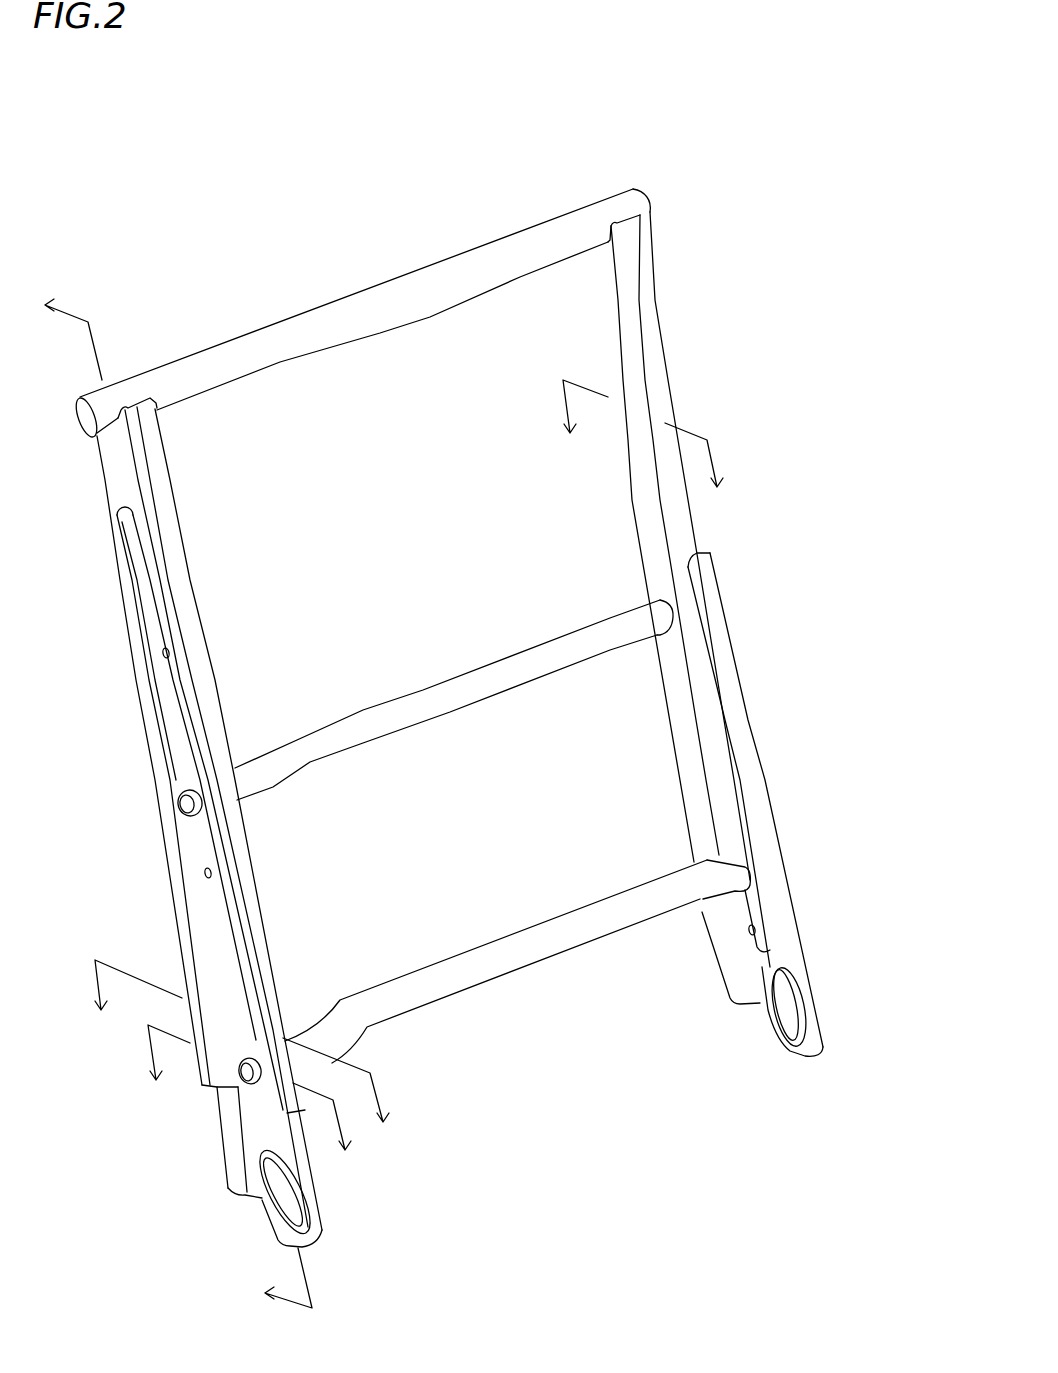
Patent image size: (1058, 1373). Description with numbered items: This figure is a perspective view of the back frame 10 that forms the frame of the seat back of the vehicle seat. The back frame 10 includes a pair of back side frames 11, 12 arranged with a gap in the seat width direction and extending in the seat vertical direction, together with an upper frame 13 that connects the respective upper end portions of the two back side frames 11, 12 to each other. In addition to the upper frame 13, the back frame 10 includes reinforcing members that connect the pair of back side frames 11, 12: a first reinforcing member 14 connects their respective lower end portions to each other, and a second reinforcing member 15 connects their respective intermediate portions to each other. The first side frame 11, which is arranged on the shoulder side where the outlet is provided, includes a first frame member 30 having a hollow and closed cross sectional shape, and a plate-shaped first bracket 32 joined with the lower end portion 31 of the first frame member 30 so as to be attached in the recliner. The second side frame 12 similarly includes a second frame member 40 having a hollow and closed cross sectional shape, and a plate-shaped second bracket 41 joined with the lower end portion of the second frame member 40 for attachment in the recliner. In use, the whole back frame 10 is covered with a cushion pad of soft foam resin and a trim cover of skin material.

The back frame 10 is at (112, 89).
The back side frame 11 is at (158, 909).
The back side frame 12 is at (733, 549).
The upper frame 13 is at (370, 302).
The first reinforcing member 14 is at (525, 952).
The second reinforcing member 15 is at (455, 688).
The first frame member 30 is at (170, 721).
The lower end portion 31 is at (237, 1027).
The first bracket 32 is at (255, 1130).
The second frame member 40 is at (653, 372).
The second bracket 41 is at (800, 930).